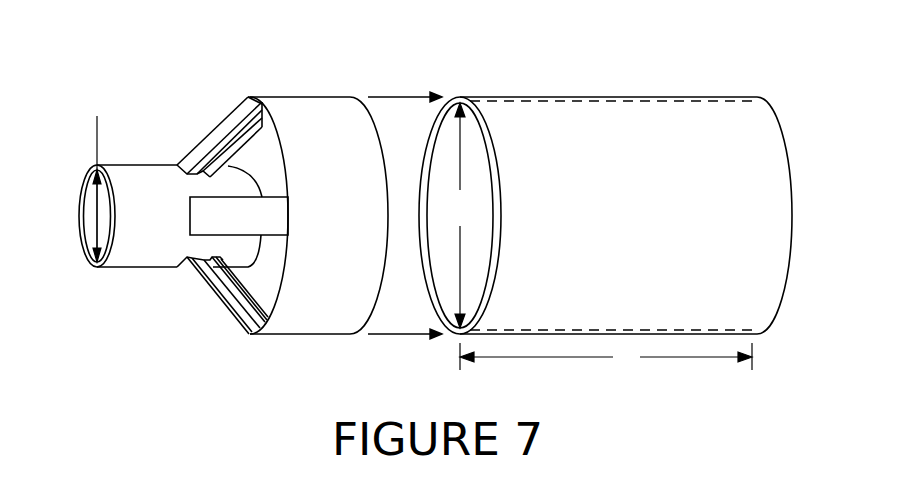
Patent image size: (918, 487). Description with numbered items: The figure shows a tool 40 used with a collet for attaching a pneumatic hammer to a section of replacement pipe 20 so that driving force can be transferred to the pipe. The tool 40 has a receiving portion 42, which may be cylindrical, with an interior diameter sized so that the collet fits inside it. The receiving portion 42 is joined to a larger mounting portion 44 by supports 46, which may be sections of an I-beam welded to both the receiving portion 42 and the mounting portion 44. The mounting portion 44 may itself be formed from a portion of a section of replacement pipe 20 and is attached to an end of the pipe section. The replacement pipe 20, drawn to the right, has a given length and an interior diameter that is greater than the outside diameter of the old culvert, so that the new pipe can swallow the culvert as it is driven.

The replacement pipe 20 is at (588, 97).
The tool 40 is at (222, 78).
The receiving portion 42 is at (133, 175).
The mounting portion 44 is at (310, 337).
The supports 46 is at (230, 123).